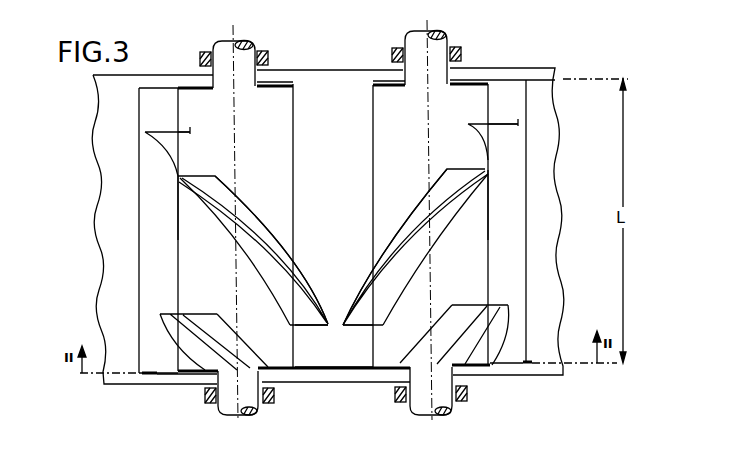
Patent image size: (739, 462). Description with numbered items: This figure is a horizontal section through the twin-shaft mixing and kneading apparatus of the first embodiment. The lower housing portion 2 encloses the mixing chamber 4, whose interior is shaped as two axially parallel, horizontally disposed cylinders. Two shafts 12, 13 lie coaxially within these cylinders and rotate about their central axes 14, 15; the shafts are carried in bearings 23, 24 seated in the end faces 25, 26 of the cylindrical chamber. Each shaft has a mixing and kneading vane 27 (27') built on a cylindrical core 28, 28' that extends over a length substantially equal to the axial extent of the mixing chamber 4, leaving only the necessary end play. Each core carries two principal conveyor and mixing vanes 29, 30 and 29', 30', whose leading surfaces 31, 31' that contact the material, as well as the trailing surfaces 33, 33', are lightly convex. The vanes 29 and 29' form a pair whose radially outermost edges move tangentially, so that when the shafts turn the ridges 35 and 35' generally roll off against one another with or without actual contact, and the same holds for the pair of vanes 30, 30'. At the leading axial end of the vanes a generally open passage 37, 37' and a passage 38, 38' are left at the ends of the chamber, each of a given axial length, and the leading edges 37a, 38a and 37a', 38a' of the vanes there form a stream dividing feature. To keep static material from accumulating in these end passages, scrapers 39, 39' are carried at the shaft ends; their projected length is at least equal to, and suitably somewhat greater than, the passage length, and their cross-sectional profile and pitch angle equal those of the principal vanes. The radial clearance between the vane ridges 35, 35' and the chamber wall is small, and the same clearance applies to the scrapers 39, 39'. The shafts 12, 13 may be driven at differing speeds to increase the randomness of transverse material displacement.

The lower housing portion 2 is at (557, 243).
The mixing chamber 4 is at (513, 275).
The shaft 12 is at (437, 47).
The shaft 13 is at (245, 55).
The central axis 14 is at (427, 25).
The central axis 15 is at (233, 35).
The bearing 23 is at (461, 50).
The bearing 24 is at (467, 397).
The end face 25 is at (365, 75).
The end face 26 is at (145, 384).
The mixing and kneading vane 27 is at (541, 181).
The mixing and kneading vane 27' is at (117, 187).
The cylindrical core 28 is at (538, 216).
The cylindrical core 28' is at (118, 220).
The principal conveyor and mixing vane 29 is at (415, 247).
The principal conveyor and mixing vane 29' is at (257, 251).
The principal conveyor and mixing vane 30 is at (531, 135).
The principal conveyor and mixing vane 30' is at (123, 149).
The blade upper edge 31 is at (395, 247).
The blade upper edge 31' is at (271, 250).
The trailing surface 33 is at (435, 249).
The trailing surface 33' is at (235, 252).
The ridge 35 is at (415, 248).
The ridge 35' is at (257, 250).
The passage 37 is at (334, 384).
The passage 37' is at (334, 384).
The leading edge 37a is at (379, 342).
The leading edge 37a' is at (324, 342).
The passage 38 is at (484, 223).
The passage 38' is at (175, 226).
The leading edge 38a is at (485, 109).
The leading edge 38a' is at (205, 117).
The scraper 39 is at (454, 316).
The scraper 39' is at (214, 321).